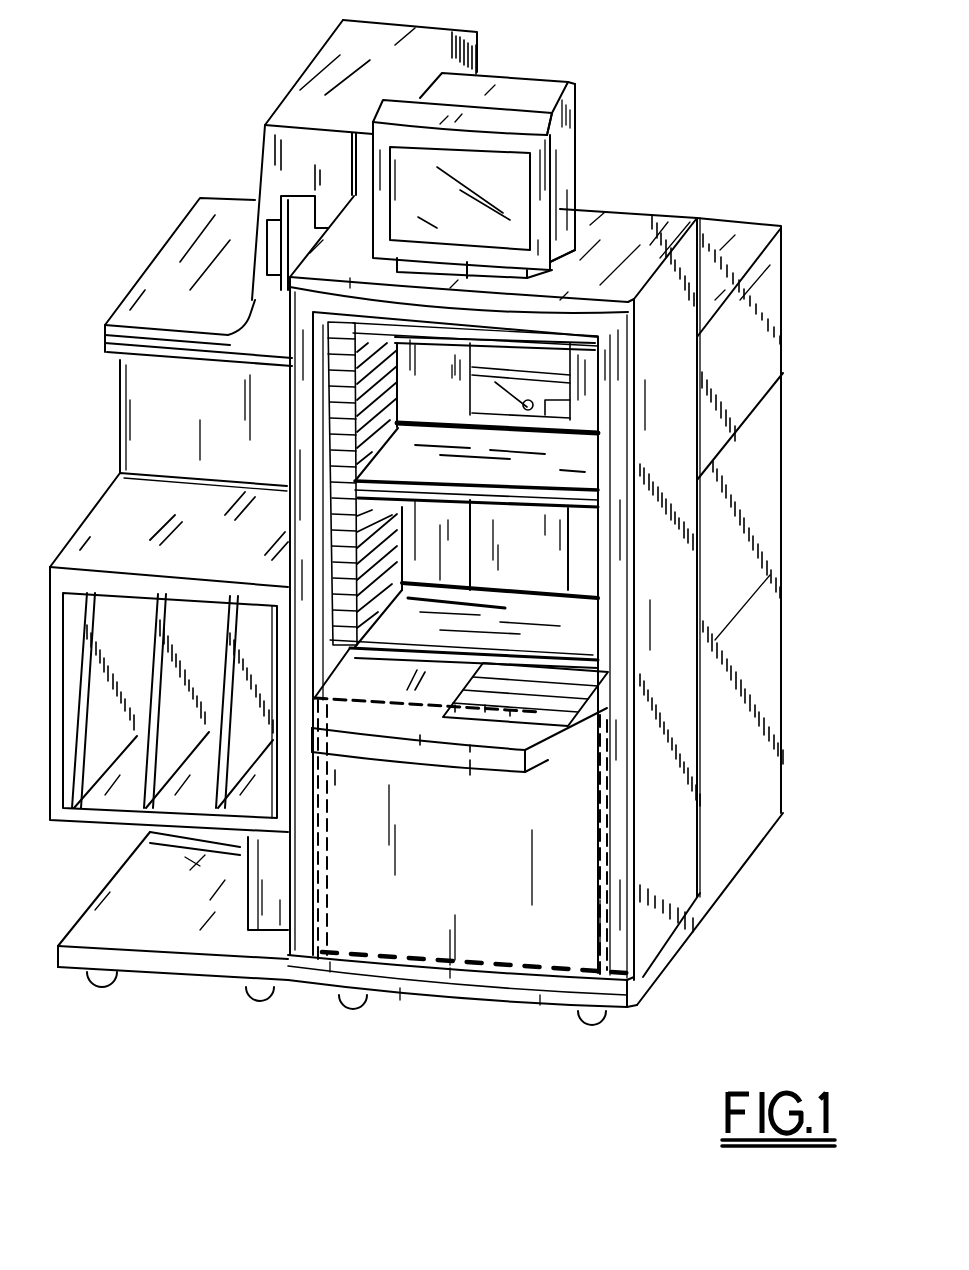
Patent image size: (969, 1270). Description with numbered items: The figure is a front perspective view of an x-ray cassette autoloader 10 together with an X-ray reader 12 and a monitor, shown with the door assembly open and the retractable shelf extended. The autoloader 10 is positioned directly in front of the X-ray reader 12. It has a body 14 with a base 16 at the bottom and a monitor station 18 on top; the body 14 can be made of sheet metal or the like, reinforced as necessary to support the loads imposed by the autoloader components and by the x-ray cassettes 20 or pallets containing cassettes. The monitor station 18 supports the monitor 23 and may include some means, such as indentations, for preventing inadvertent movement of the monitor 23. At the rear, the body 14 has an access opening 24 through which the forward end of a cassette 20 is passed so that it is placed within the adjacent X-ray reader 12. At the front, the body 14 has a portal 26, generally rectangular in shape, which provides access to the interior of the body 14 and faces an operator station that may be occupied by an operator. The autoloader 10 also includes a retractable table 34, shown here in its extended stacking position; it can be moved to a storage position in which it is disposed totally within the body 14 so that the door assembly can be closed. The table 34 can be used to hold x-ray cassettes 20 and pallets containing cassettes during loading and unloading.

The autoloader 10 is at (505, 564).
The X-ray reader 12 is at (783, 283).
The body 14 is at (660, 607).
The base 16 is at (668, 941).
The monitor station 18 is at (571, 75).
The x-ray cassettes 20 is at (568, 477).
The monitor 23 is at (557, 153).
The access opening 24 is at (445, 423).
The portal 26 is at (583, 420).
The retractable table 34 is at (399, 696).